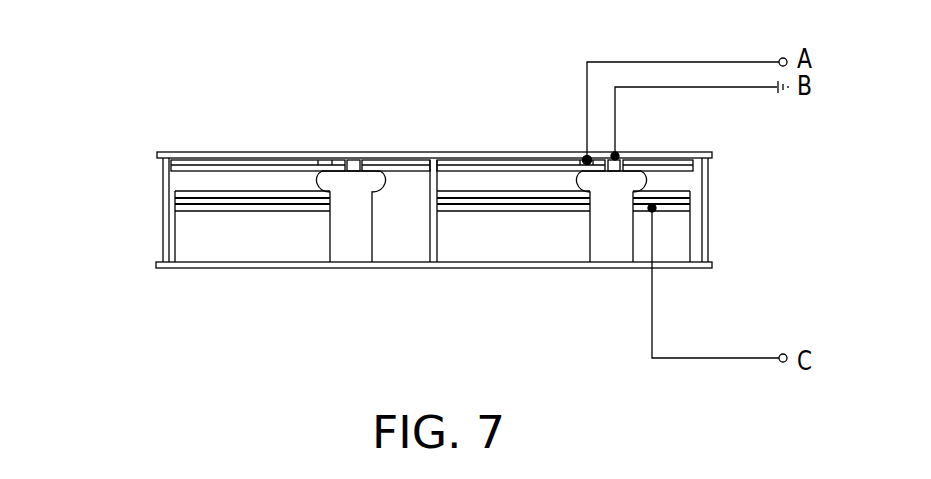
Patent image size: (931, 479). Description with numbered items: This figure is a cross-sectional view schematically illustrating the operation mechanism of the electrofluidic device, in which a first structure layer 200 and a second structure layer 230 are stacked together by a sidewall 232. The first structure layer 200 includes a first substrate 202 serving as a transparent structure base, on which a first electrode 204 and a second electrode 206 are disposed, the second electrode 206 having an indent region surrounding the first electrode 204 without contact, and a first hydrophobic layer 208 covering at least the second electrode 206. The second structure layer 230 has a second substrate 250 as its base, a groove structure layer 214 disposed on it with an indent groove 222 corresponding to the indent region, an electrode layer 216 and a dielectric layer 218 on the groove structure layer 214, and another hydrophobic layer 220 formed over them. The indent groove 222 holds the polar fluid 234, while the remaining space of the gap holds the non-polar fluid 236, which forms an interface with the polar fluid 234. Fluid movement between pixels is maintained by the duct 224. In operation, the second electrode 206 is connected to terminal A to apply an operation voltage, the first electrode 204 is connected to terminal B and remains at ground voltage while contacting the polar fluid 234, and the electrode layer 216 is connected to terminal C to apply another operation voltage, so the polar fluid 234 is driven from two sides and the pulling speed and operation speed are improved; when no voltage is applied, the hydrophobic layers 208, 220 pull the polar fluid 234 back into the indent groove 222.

The first structure layer 200 is at (165, 137).
The first substrate 202 is at (703, 157).
The first electrode 204 is at (353, 158).
The second electrode 206 is at (250, 165).
The first hydrophobic layer 208 is at (530, 168).
The groove structure layer 214 is at (500, 237).
The electrode layer 216 is at (295, 208).
The dielectric layer 218 is at (225, 200).
The hydrophobic layer 220 is at (500, 192).
The indent groove 222 is at (602, 236).
The duct 224 is at (433, 243).
The second structure layer 230 is at (168, 298).
The sidewall 232 is at (703, 205).
The polar fluid 234 is at (353, 242).
The non-polar fluid 236 is at (203, 182).
The second substrate 250 is at (677, 267).